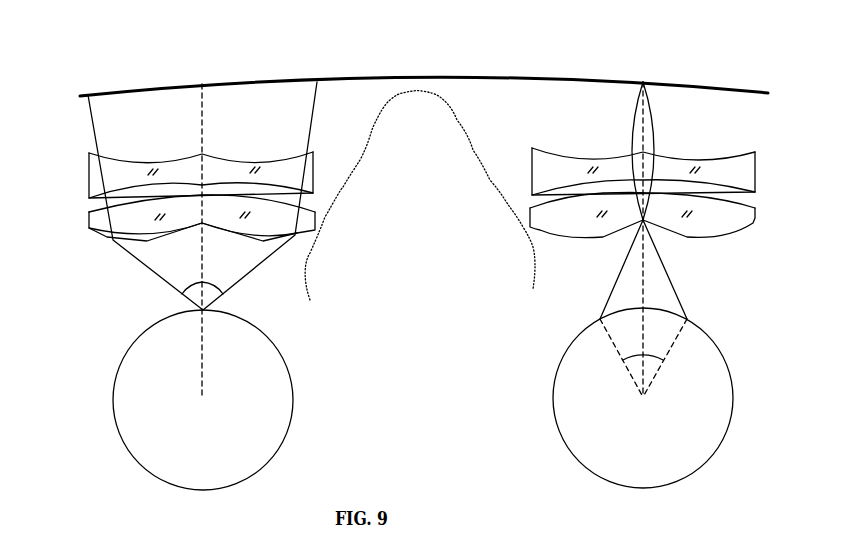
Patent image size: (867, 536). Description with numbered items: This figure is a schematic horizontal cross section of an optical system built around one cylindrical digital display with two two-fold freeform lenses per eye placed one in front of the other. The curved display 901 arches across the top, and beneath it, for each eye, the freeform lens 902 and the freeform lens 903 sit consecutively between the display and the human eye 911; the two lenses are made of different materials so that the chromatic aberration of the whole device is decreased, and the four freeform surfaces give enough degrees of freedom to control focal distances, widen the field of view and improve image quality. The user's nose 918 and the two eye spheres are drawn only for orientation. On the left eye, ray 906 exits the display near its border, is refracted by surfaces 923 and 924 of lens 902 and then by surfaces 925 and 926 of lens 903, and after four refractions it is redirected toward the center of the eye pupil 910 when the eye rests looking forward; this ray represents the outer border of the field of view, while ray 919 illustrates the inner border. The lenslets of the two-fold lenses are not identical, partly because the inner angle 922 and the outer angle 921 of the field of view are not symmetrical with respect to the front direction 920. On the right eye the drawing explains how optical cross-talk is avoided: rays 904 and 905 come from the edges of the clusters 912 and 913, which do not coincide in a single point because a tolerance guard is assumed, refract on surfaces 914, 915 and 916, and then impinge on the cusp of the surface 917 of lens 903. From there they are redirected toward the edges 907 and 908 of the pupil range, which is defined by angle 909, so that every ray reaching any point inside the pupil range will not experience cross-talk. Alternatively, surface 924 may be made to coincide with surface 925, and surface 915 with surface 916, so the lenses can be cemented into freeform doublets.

The curved display 901 is at (100, 93).
The freeform lens 902 is at (95, 170).
The freeform lens 903 is at (100, 222).
The ray 904 is at (633, 130).
The ray 905 is at (652, 130).
The ray 906 is at (95, 128).
The edge of the pupil range 907 is at (600, 319).
The edge of the pupil range 908 is at (688, 319).
The angle 909 is at (645, 356).
The center of the eye pupil 910 is at (207, 310).
The human eye 911 is at (733, 377).
The cluster 912 is at (643, 82).
The cluster 913 is at (645, 82).
The surface 914 is at (738, 153).
The surface 915 is at (742, 190).
The surface 916 is at (742, 207).
The surface 917 is at (738, 232).
The nose 918 is at (373, 125).
The ray 919 is at (310, 123).
The front direction 920 is at (202, 128).
The outer angle 921 is at (195, 287).
The inner angle 922 is at (212, 283).
The surface 923 is at (305, 157).
The surface 924 is at (303, 197).
The surface 925 is at (300, 210).
The surface 926 is at (300, 233).